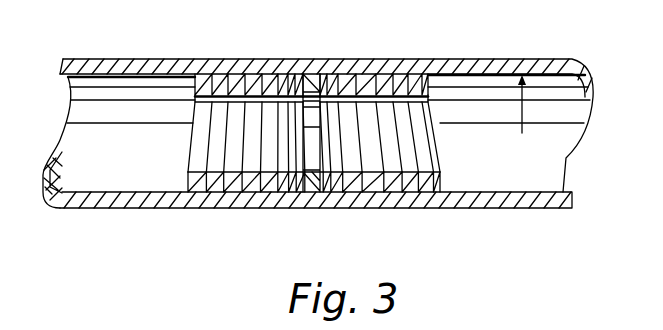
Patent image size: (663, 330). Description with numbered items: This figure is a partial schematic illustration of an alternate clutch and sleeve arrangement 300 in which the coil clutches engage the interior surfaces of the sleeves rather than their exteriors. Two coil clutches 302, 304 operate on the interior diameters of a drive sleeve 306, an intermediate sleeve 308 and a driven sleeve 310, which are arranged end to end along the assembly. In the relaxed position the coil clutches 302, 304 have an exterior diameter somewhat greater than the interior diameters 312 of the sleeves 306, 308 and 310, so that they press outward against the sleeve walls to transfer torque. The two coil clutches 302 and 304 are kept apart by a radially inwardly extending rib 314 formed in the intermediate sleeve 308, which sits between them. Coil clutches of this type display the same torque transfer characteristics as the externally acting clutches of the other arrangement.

The clutch and sleeve arrangement 300 is at (182, 57).
The coil clutch 302 is at (430, 98).
The coil clutch 304 is at (203, 87).
The drive sleeve 306 is at (498, 63).
The intermediate sleeve 308 is at (313, 198).
The driven sleeve 310 is at (138, 206).
The interior diameters 312 is at (523, 100).
The radially inwardly extending rib 314 is at (319, 73).